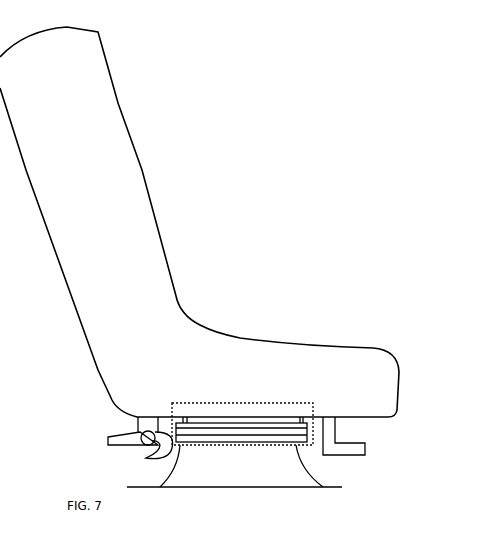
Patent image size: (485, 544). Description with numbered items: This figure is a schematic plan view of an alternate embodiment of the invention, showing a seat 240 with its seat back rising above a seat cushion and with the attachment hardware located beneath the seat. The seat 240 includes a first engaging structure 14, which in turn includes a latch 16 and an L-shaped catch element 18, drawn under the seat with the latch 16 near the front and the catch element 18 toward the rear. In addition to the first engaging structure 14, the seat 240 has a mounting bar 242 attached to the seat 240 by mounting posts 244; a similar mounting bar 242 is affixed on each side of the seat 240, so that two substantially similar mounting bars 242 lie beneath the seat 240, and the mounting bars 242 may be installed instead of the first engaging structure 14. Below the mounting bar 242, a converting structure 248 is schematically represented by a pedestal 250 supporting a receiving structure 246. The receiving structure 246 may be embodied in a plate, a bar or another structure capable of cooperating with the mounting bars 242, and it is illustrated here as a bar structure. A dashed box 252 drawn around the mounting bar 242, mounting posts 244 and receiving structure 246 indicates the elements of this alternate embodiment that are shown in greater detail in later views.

The seat 240 is at (274, 313).
The box 252 is at (173, 405).
The mounting bar 242 is at (254, 425).
The mounting posts 244 is at (192, 417).
The receiving structure 246 is at (264, 440).
The L-shaped catch element 18 is at (338, 428).
The first engaging structure 14 is at (90, 427).
The latch 16 is at (158, 465).
The pedestal 250 is at (217, 478).
The converting structure 248 is at (267, 502).